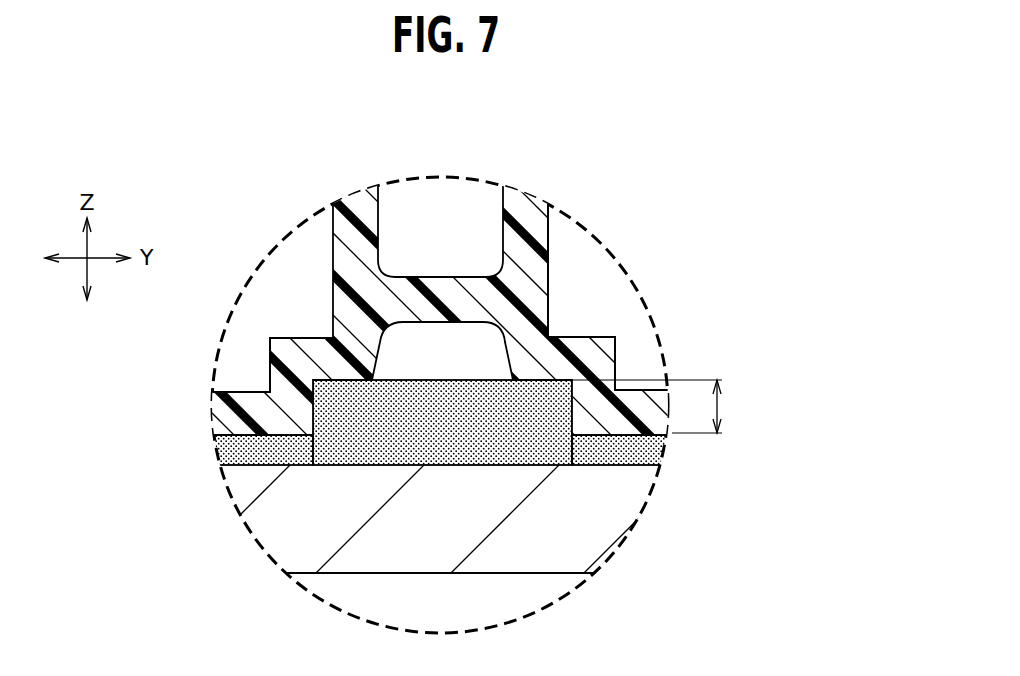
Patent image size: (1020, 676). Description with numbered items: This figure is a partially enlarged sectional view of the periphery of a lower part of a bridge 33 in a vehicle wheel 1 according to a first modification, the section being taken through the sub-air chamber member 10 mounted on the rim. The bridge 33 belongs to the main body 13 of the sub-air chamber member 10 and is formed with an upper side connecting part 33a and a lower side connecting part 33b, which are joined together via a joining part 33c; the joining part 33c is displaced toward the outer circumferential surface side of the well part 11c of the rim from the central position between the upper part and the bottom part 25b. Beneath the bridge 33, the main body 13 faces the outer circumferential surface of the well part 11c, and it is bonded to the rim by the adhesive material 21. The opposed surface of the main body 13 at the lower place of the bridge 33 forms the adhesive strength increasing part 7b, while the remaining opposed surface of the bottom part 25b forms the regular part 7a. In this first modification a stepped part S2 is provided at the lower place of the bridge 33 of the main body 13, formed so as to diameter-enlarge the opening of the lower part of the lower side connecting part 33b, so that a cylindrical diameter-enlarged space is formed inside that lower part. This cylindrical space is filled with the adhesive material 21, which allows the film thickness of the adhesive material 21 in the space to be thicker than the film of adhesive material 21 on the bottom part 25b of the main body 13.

The vehicle wheel 1 is at (512, 585).
The regular part 7a is at (605, 452).
The adhesive strength increasing part 7b is at (541, 422).
The protective film 10 is at (653, 297).
The main body 13 is at (615, 348).
The well part 11c is at (721, 433).
The adhesive material 21 is at (217, 449).
The bottom part 25b is at (256, 400).
The bridge 33 is at (450, 338).
The upper side connecting part 33a is at (366, 214).
The lower side connecting part 33b is at (363, 362).
The joining part 33c is at (346, 128).
The stepped part S2 is at (723, 407).